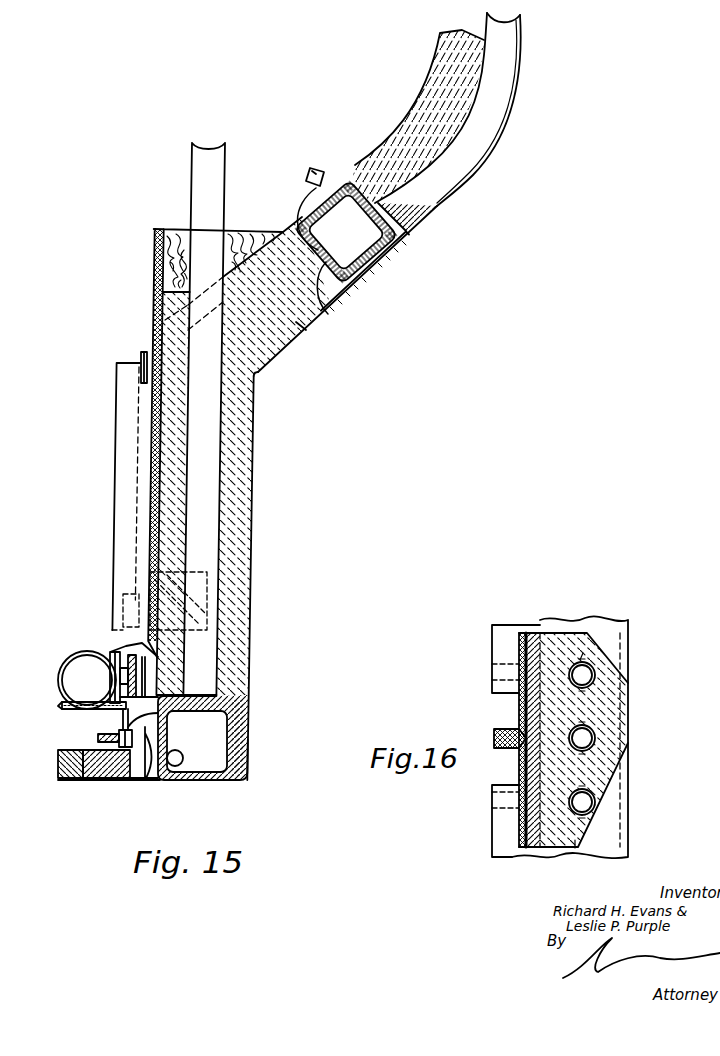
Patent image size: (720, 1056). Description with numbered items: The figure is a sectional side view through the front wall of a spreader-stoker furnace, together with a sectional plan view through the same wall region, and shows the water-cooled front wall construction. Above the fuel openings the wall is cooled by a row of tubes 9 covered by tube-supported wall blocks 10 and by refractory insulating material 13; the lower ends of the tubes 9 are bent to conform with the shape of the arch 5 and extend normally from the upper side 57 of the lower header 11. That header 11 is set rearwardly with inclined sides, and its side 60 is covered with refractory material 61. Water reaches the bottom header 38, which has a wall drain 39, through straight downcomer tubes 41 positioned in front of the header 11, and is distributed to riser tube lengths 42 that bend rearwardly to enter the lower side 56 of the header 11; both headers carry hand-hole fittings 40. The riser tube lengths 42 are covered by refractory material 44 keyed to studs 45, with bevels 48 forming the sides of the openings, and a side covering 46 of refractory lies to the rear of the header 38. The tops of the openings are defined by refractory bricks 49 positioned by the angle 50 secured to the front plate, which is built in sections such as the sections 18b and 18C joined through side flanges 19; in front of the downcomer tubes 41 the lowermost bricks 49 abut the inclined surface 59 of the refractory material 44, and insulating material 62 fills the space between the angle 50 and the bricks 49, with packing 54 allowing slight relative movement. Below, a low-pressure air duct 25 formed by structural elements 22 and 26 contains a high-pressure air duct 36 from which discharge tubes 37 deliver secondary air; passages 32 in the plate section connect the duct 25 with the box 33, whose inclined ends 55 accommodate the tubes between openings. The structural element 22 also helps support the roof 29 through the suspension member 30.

In FIG. 15, the arch 5 is at (333, 312).
In FIG. 15, the tubes 9 is at (486, 122).
In FIG. 15, the tube-supported wall blocks 10 is at (494, 152).
In FIG. 15, the lower header 11 is at (406, 249).
In FIG. 15, the refractory insulating material 13 is at (420, 118).
In FIG. 16, the plate section 18b is at (522, 653).
In FIG. 15, the plate section 18C is at (141, 356).
In FIG. 16, the plate section 18C is at (520, 838).
In FIG. 15, the side flanges 19 is at (125, 436).
In FIG. 16, the side flanges 19 is at (493, 735).
In FIG. 15, the structural element 22 is at (110, 662).
In FIG. 15, the low-pressure air duct 25 is at (63, 708).
In FIG. 15, the structural element 26 is at (83, 712).
In FIG. 15, the roof 29 is at (69, 775).
In FIG. 15, the suspension member 30 is at (103, 756).
In FIG. 15, the passages 32 is at (127, 612).
In FIG. 16, the passages 32 is at (530, 800).
In FIG. 15, the box 33 is at (207, 613).
In FIG. 16, the box 33 is at (575, 848).
In FIG. 15, the high-pressure air duct 36 is at (88, 670).
In FIG. 15, the discharge tubes 37 is at (145, 672).
In FIG. 15, the bottom header 38 is at (212, 759).
In FIG. 15, the wall drain 39 is at (176, 766).
In FIG. 15, the hand-hole fittings 40 is at (108, 737).
In FIG. 15, the downcomer tubes 41 is at (212, 162).
In FIG. 16, the riser tube lengths 42 is at (600, 738).
In FIG. 15, the refractory material 44 is at (253, 500).
In FIG. 16, the refractory material 44 is at (603, 780).
In FIG. 16, the studs 45 is at (600, 672).
In FIG. 15, the side covering 46 is at (244, 729).
In FIG. 16, the bevels 48 is at (600, 818).
In FIG. 15, the refractory bricks 49 is at (303, 326).
In FIG. 15, the angle 50 is at (154, 283).
In FIG. 15, the packing 54 is at (148, 545).
In FIG. 16, the packing 54 is at (522, 768).
In FIG. 16, the box ends 55 is at (542, 848).
In FIG. 15, the lower side of header 56 is at (313, 321).
In FIG. 15, the upper side of header 57 is at (388, 238).
In FIG. 15, the inclined surface 59 is at (255, 372).
In FIG. 15, the side of header 60 is at (373, 279).
In FIG. 15, the refractory material 61 is at (349, 300).
In FIG. 15, the insulating material 62 is at (237, 231).